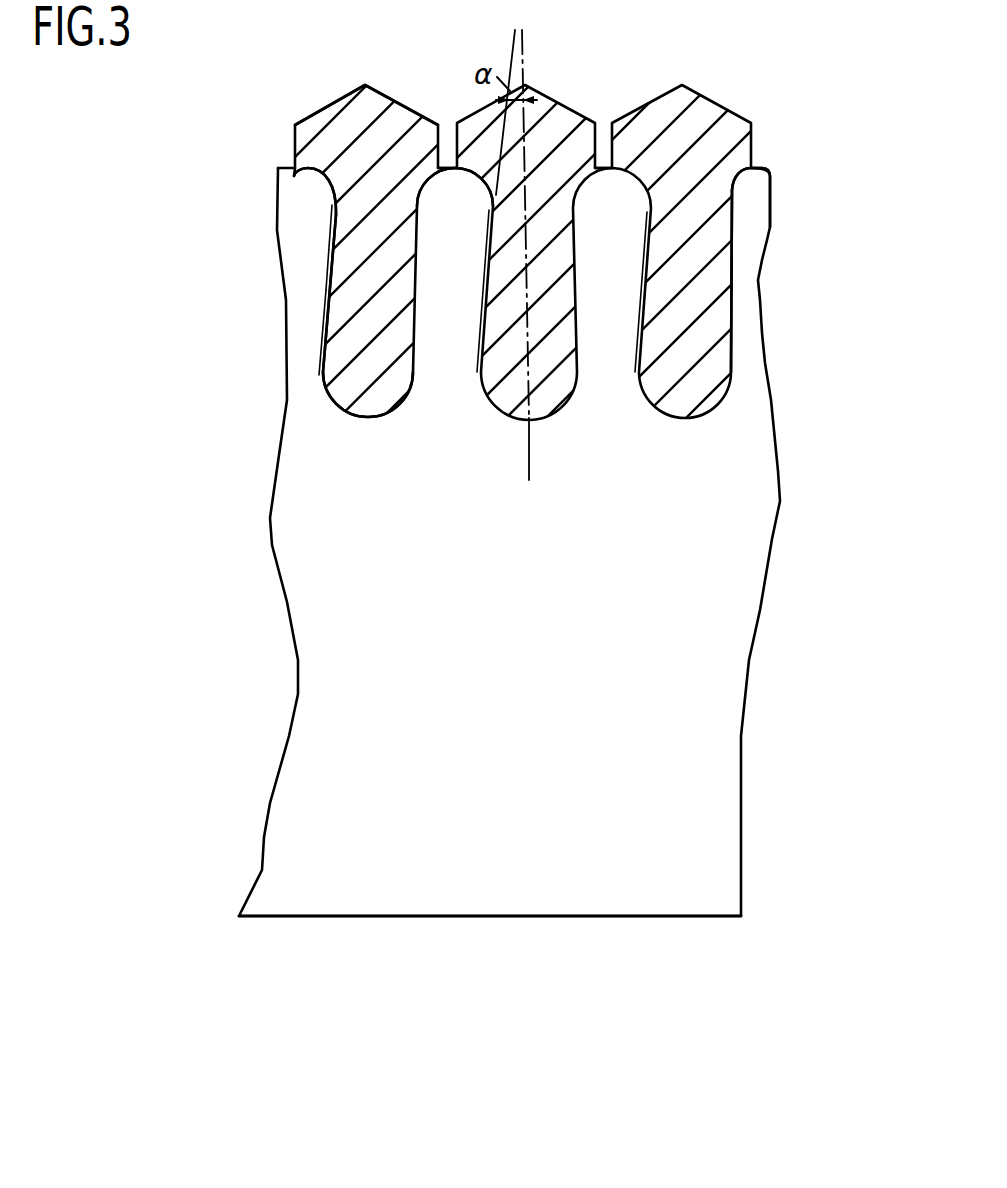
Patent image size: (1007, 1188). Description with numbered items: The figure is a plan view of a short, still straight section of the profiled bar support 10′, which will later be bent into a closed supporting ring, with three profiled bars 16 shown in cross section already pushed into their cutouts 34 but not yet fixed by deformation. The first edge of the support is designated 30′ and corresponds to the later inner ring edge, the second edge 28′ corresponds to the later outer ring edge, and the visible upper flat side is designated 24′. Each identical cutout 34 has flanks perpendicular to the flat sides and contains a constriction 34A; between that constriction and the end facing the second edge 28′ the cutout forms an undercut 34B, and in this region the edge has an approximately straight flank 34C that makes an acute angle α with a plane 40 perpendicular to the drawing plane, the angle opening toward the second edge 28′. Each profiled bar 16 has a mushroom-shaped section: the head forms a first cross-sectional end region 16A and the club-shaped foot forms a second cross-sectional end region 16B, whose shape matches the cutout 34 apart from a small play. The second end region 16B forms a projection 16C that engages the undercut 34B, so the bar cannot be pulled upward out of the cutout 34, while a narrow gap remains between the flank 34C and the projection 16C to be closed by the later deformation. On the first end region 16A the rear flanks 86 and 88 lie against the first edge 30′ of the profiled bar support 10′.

The profiled bar support 10′ is at (588, 932).
The profiled bar 16 is at (374, 70).
The first cross-sectional end region 16A is at (332, 140).
The second cross-sectional end region 16B is at (354, 364).
The projection 16C is at (310, 343).
The upper flat side 24′ is at (720, 714).
The second edge 28′ is at (696, 917).
The first edge 30′ is at (764, 166).
The cutout 34 is at (719, 340).
The constriction 34A is at (695, 200).
The undercut 34B is at (346, 262).
The flank 34C is at (334, 300).
The plane 40 is at (529, 480).
The rear flank 86 is at (297, 182).
The rear flank 88 is at (430, 180).